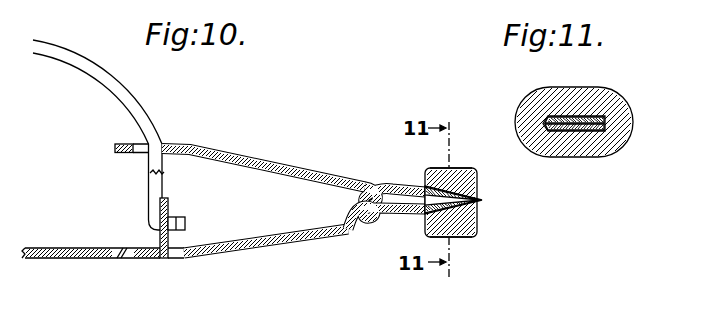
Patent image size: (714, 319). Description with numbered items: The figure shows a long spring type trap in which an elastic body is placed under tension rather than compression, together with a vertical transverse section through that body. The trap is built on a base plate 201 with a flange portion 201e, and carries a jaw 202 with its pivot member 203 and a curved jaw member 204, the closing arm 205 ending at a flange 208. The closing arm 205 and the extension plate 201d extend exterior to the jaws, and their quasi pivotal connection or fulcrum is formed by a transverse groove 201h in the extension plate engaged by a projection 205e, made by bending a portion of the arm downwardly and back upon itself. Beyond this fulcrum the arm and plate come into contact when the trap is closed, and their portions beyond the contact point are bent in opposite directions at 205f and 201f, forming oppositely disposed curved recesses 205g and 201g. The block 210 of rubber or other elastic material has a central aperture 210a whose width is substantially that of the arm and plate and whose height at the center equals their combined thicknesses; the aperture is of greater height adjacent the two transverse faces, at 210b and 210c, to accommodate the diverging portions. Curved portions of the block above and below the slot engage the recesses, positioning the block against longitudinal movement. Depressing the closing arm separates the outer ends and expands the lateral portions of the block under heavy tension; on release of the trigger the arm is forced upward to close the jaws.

In FIG. 10, the base plate 201 is at (73, 259).
In FIG. 10, the extension plate 201d is at (270, 241).
In FIG. 11, the extension plate 201d is at (582, 131).
In FIG. 10, the flange portion of extension plate 201e is at (176, 259).
In FIG. 10, the bent end portion of extension plate 201f is at (476, 214).
In FIG. 10, the curved recess of extension plate 201g is at (458, 238).
In FIG. 10, the transverse groove 201h is at (372, 214).
In FIG. 10, the jaw 202 is at (167, 203).
In FIG. 10, the jaw pivot member 203 is at (186, 222).
In FIG. 10, the jaw member 204 is at (150, 184).
In FIG. 10, the closing arm 205 is at (241, 153).
In FIG. 11, the closing arm 205 is at (560, 118).
In FIG. 10, the projection of closing arm 205e is at (366, 189).
In FIG. 10, the bent end portion of closing arm 205f is at (472, 191).
In FIG. 10, the curved recess of closing arm 205g is at (452, 171).
In FIG. 10, the flange 208 is at (173, 144).
In FIG. 11, the elastic block 210 is at (578, 88).
In FIG. 11, the central aperture 210a is at (594, 117).
In FIG. 10, the enlarged aperture portion 210b is at (466, 201).
In FIG. 10, the enlarged aperture portion 210c is at (420, 193).